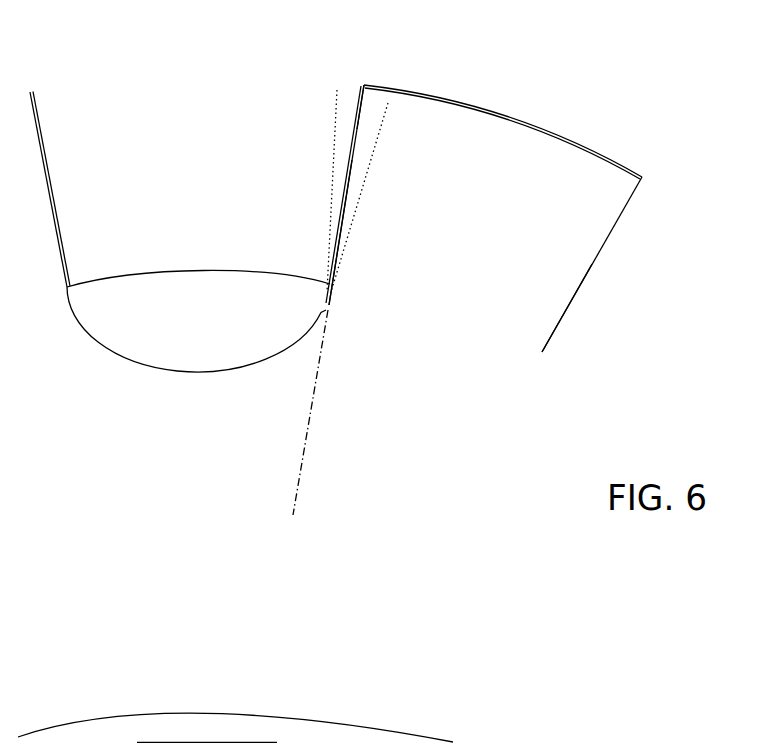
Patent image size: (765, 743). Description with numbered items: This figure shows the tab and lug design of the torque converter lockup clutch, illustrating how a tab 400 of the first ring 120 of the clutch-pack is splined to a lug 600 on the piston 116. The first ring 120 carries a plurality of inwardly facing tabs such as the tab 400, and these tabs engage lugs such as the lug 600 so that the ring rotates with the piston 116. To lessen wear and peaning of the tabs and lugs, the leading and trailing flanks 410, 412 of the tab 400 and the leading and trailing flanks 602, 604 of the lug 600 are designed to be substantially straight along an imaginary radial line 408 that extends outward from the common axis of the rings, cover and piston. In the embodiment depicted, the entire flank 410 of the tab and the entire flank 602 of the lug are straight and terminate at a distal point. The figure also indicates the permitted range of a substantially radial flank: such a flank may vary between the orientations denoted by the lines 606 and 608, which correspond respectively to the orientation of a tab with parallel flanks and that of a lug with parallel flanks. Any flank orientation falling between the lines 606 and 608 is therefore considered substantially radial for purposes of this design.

The trailing flank 412 is at (40, 118).
The leading flank 410 is at (352, 155).
The first ring 120 is at (373, 33).
The line 606 is at (330, 173).
The line 608 is at (383, 127).
The lug 600 is at (507, 188).
The tab 400 is at (215, 186).
The leading flank 602 is at (352, 203).
The trailing flank 604 is at (577, 292).
The piston 116 is at (437, 401).
The imaginary radial line 408 is at (302, 454).